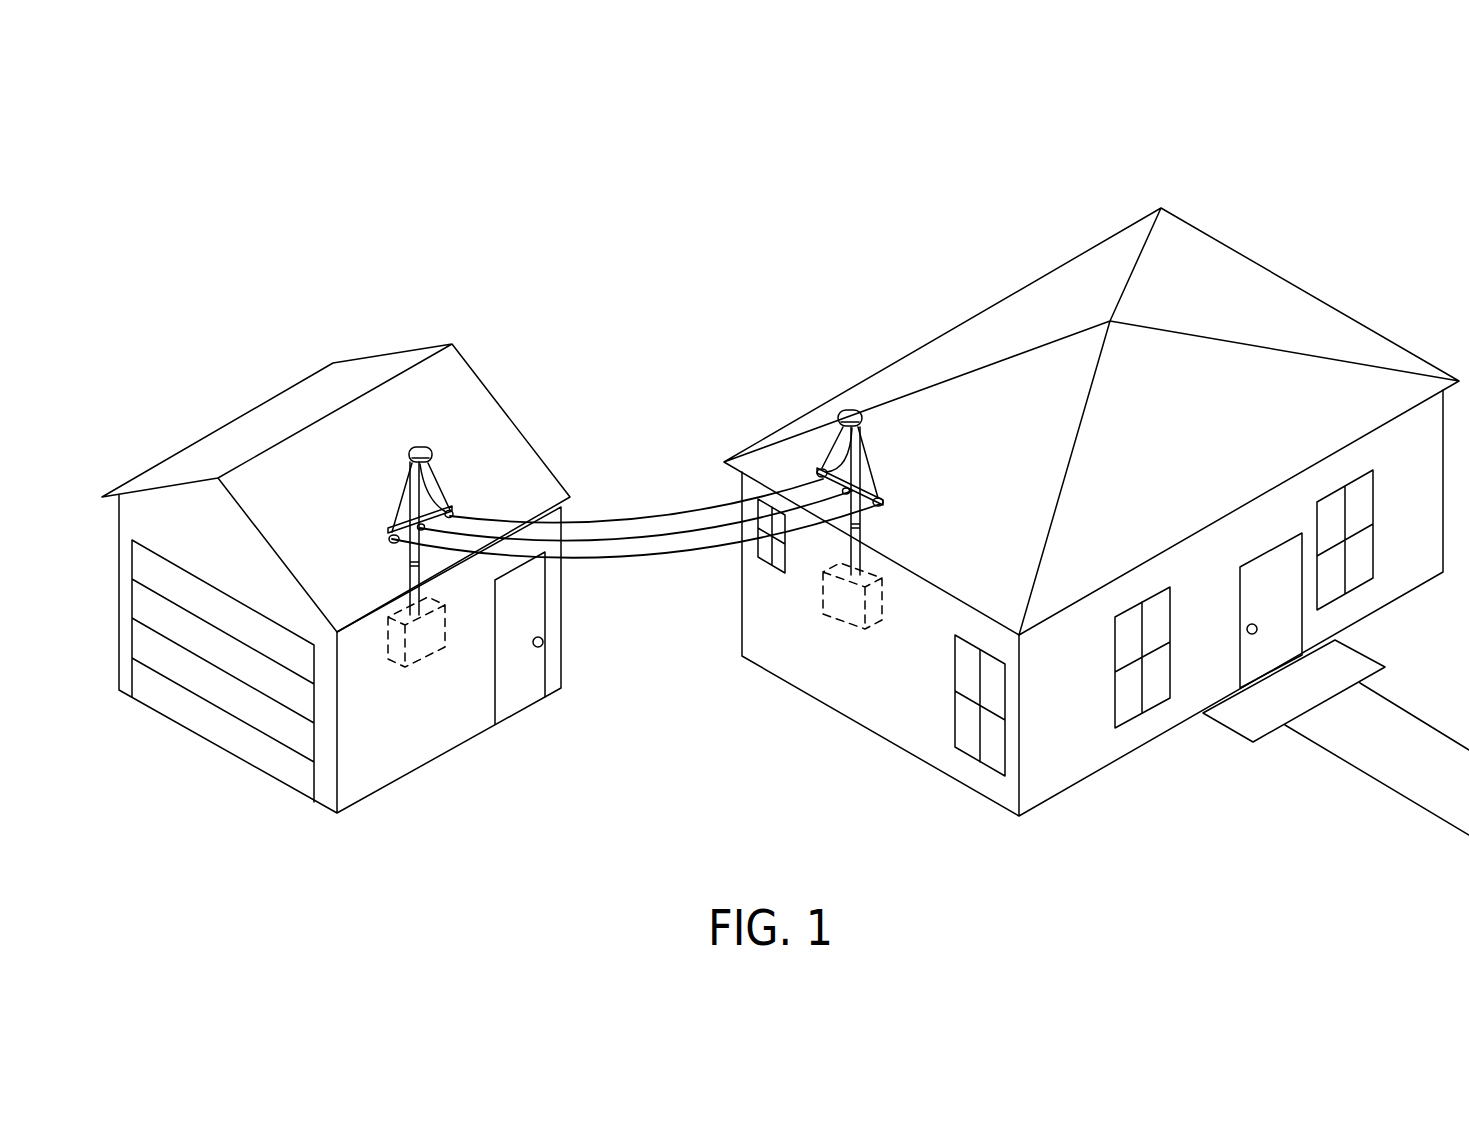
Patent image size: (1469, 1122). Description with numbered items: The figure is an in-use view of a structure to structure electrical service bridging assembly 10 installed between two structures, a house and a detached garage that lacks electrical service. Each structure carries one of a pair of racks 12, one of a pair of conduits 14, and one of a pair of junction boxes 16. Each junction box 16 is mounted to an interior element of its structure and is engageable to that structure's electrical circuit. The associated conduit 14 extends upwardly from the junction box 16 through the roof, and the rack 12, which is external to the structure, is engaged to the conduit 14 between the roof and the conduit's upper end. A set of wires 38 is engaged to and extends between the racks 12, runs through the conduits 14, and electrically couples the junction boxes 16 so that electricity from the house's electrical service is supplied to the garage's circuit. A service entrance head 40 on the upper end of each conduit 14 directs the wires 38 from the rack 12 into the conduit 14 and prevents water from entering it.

The structure to structure electrical service bridging assembly 10 is at (1253, 177).
The rack 12 is at (392, 527).
The conduit 14 is at (402, 480).
The junction box 16 is at (848, 623).
The set of wires 38 is at (692, 547).
The service entrance head 40 is at (422, 447).